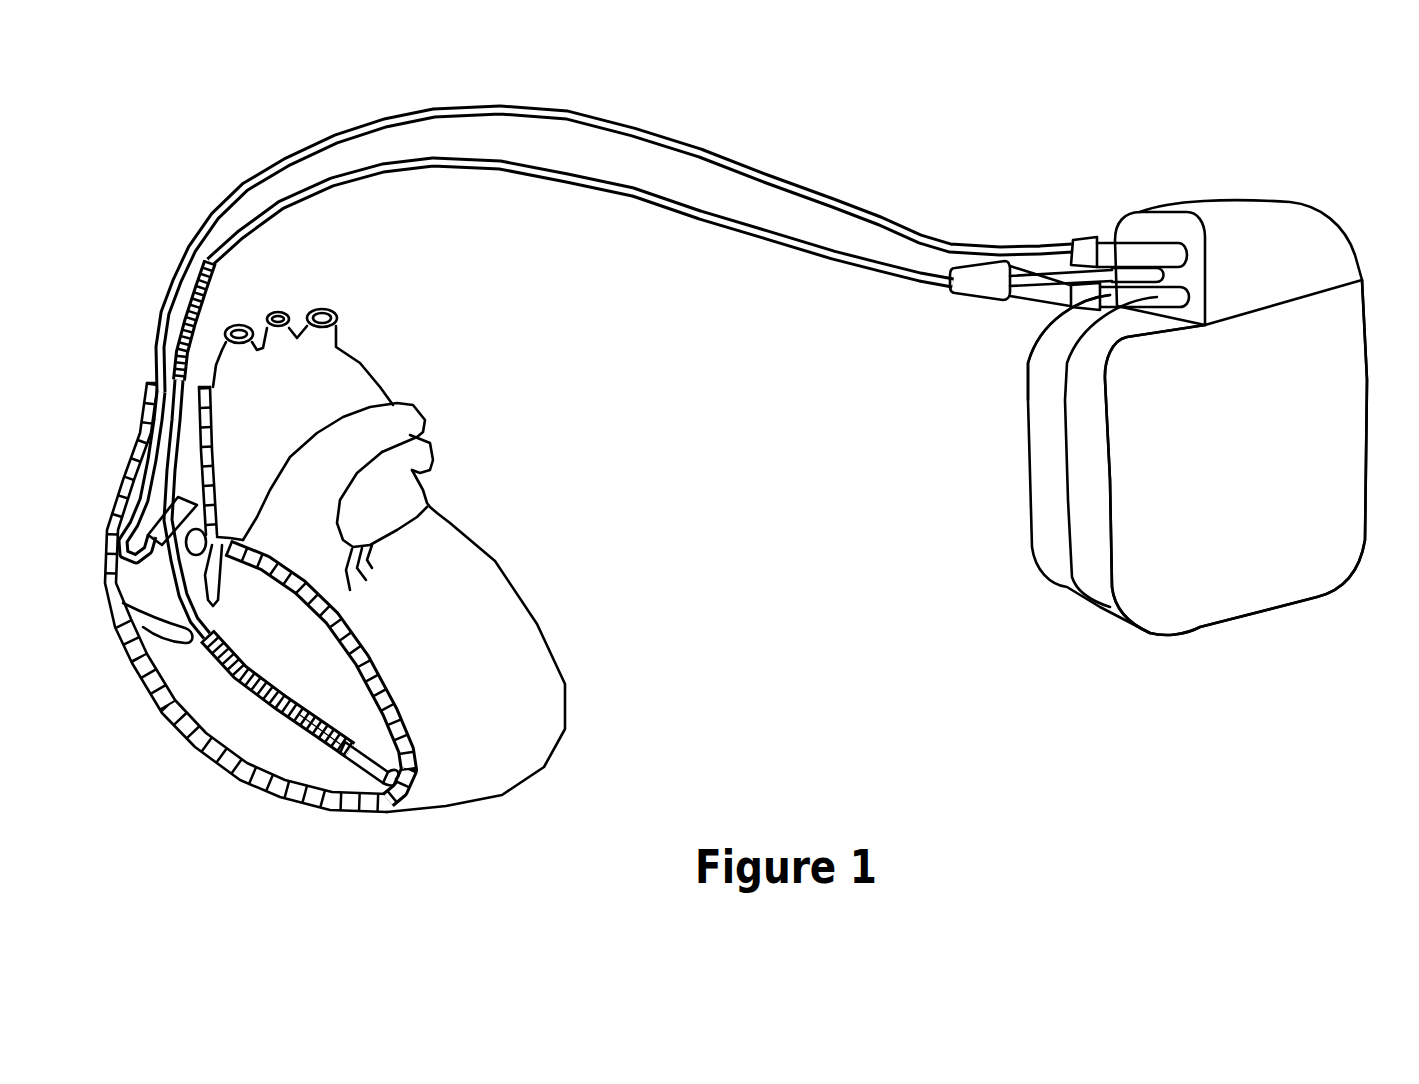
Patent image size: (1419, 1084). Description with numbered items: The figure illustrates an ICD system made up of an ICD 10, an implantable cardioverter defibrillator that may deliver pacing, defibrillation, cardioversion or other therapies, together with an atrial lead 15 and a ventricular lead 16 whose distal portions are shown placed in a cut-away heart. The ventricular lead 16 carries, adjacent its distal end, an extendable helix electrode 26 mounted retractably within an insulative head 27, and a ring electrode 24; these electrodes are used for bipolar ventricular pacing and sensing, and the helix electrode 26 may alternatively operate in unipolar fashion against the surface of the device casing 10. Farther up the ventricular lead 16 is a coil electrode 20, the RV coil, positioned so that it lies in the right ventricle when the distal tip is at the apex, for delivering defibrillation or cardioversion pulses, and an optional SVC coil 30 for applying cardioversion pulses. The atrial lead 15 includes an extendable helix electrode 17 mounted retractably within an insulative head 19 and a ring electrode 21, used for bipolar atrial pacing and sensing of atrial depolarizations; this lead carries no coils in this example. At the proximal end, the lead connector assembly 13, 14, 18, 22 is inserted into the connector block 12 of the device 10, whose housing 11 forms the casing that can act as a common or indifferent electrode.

The ICD 10 is at (1380, 463).
The housing 11 is at (1150, 563).
The connector block 12 is at (1265, 210).
The lead connector assembly 13 is at (1113, 240).
The lead connector assembly 14 is at (1060, 313).
The atrial lead 15 is at (927, 243).
The ventricular lead 16 is at (877, 270).
The extendable helix electrode 17 is at (190, 512).
The lead connector assembly 18 is at (1150, 255).
The insulative head 19 is at (190, 508).
The coil electrode 20 is at (273, 700).
The ring electrode 21 is at (127, 540).
The lead connector assembly 22 is at (1130, 340).
The ring electrode 24 is at (335, 752).
The extendable helix electrode 26 is at (377, 780).
The insulative head 27 is at (363, 763).
The SVC coil 30 is at (200, 298).